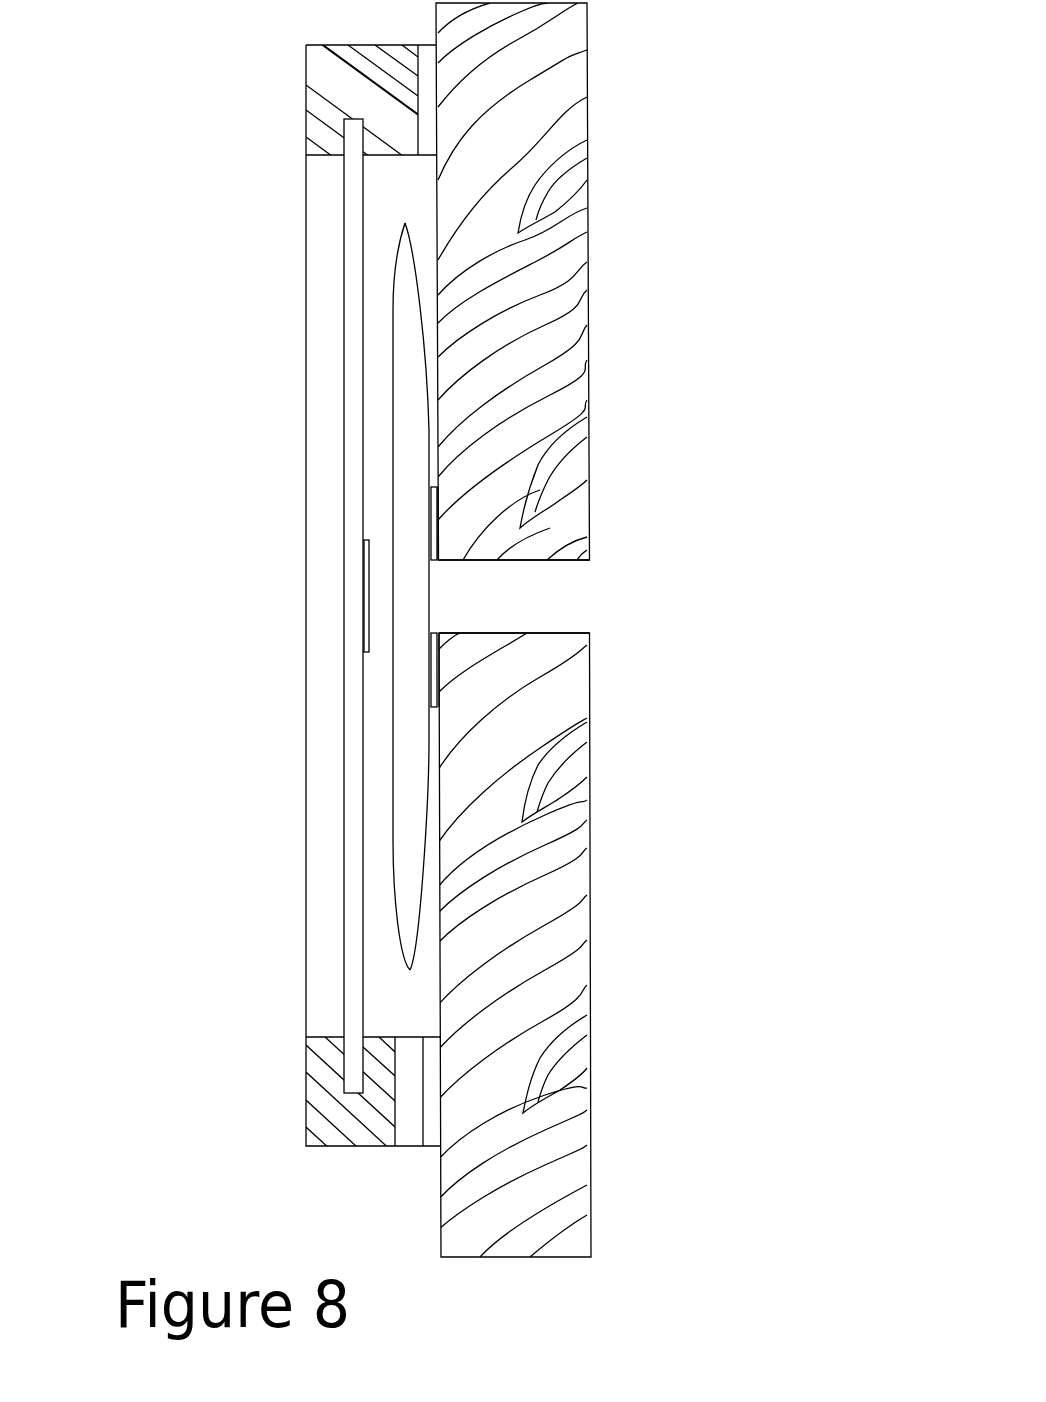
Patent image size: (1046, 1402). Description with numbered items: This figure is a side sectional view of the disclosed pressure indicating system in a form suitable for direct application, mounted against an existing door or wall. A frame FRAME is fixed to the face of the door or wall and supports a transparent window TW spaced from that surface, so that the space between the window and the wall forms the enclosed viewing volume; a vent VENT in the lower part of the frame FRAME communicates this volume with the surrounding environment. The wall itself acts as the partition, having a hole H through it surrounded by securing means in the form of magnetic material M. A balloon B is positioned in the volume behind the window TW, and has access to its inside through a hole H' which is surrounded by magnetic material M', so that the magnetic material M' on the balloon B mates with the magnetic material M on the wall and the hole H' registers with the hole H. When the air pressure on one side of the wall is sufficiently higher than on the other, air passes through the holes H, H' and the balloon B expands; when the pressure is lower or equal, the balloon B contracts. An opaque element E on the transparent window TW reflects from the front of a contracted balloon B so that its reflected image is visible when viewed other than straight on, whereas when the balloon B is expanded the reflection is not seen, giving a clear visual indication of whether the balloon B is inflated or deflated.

The transparent window TW is at (343, 387).
The magnetic material M' is at (317, 578).
The opaque element E is at (362, 577).
The magnetic material M is at (571, 689).
The hole H is at (592, 596).
The hole H' is at (587, 611).
The balloon B is at (394, 776).
The frame FRAME is at (307, 1113).
The vent VENT is at (407, 1135).